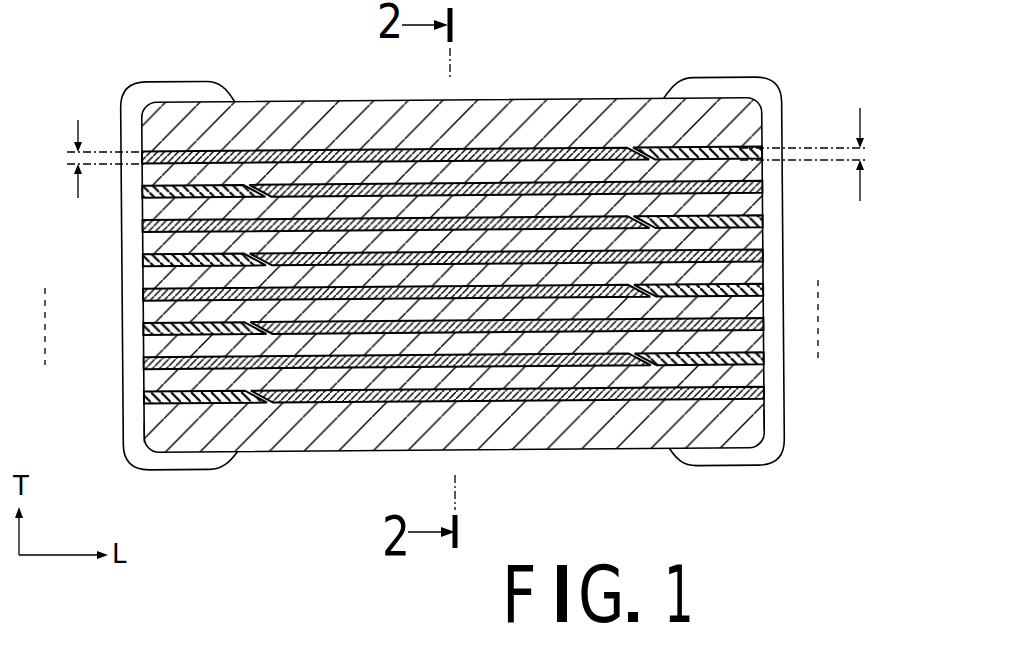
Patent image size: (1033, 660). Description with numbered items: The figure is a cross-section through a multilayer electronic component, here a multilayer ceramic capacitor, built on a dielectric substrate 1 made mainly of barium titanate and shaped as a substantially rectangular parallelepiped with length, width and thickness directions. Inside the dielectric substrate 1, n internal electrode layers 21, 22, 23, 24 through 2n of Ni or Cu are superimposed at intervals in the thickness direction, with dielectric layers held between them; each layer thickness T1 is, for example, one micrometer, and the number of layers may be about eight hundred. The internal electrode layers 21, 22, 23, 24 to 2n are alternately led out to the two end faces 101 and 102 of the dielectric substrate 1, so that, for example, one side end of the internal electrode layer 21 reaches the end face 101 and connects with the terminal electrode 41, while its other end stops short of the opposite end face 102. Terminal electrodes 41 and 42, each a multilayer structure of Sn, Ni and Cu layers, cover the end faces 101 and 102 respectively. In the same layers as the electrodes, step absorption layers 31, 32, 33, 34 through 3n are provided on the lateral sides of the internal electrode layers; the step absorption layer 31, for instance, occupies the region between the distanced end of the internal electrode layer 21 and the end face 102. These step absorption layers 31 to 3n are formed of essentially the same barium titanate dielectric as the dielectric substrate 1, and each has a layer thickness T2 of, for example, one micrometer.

The dielectric substrate 1 is at (343, 113).
The internal electrode layer 21 is at (148, 125).
The internal electrode layer 22 is at (757, 188).
The internal electrode layer 23 is at (143, 229).
The internal electrode layer 24 is at (757, 256).
The internal electrode layer 2n is at (757, 392).
The step absorption layer 31 is at (750, 147).
The step absorption layer 32 is at (143, 193).
The step absorption layer 33 is at (755, 222).
The step absorption layer 34 is at (143, 259).
The step absorption layer 3n is at (150, 396).
The terminal electrode 41 is at (168, 83).
The terminal electrode 42 is at (735, 80).
The end face 101 is at (150, 420).
The end face 102 is at (765, 412).
The layer thickness of internal electrode layer T1 is at (72, 157).
The layer thickness of step absorption layer T2 is at (866, 150).